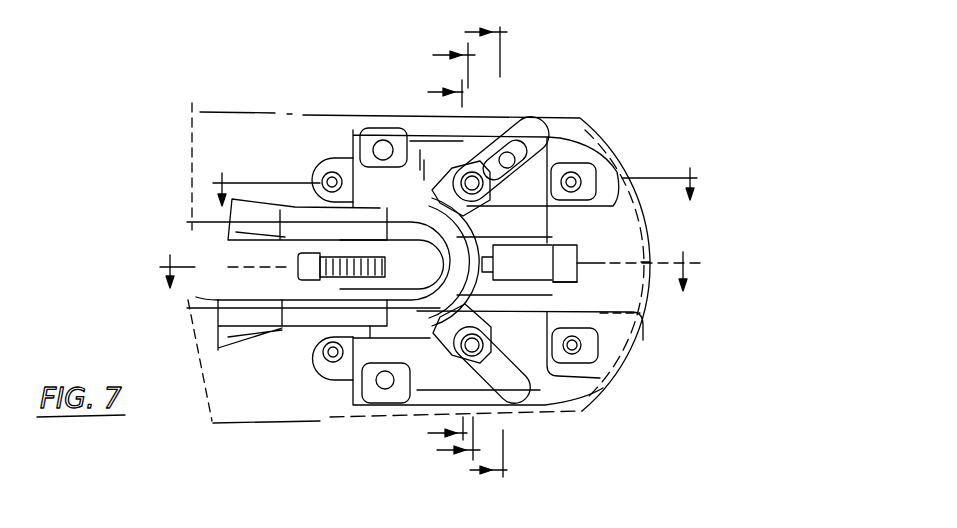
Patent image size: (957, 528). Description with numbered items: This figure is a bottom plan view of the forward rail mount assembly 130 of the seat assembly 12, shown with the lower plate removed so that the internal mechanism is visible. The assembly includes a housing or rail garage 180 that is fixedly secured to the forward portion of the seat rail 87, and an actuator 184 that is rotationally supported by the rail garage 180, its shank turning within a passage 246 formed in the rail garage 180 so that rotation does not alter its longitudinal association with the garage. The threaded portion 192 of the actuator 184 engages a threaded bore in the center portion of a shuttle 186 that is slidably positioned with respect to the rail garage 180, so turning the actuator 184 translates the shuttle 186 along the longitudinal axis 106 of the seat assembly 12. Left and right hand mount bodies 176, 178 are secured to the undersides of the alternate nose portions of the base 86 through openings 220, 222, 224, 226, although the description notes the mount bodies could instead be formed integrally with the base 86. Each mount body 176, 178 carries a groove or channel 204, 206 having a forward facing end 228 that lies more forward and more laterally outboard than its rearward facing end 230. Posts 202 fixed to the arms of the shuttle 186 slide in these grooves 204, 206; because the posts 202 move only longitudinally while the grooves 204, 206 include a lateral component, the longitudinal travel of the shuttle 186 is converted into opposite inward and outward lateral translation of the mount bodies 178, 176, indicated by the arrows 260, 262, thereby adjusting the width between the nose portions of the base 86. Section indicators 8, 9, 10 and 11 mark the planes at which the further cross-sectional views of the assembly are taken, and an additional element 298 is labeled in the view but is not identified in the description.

The section line 8- 8 is at (431, 280).
The section line 9- 9 is at (454, 191).
The section line 10- 10 is at (442, 254).
The section line 11- 11 is at (473, 243).
The seat assembly 12 is at (429, 264).
The base 86 is at (688, 131).
The rail 87 is at (243, 298).
The longitudinal axis 106 is at (643, 257).
The forward rail mount assembly 130 is at (653, 20).
The left hand mount body 176 is at (607, 158).
The right hand mount body 178 is at (613, 339).
The rail garage 180 is at (432, 277).
The actuator 184 is at (558, 283).
The shuttle 186 is at (430, 207).
The threaded portion 192 is at (325, 280).
The post 202 is at (522, 113).
The channel 204 is at (512, 156).
The channel 206 is at (487, 349).
The opening 220 is at (620, 168).
The opening 222 is at (381, 147).
The opening 224 is at (581, 346).
The opening 226 is at (357, 383).
The forward facing end 228 is at (575, 181).
The rearward facing end 230 is at (437, 189).
The passage 246 is at (615, 299).
The arrow 260 is at (767, 258).
The arrow 262 is at (765, 278).
The adjustment block 298 is at (577, 256).